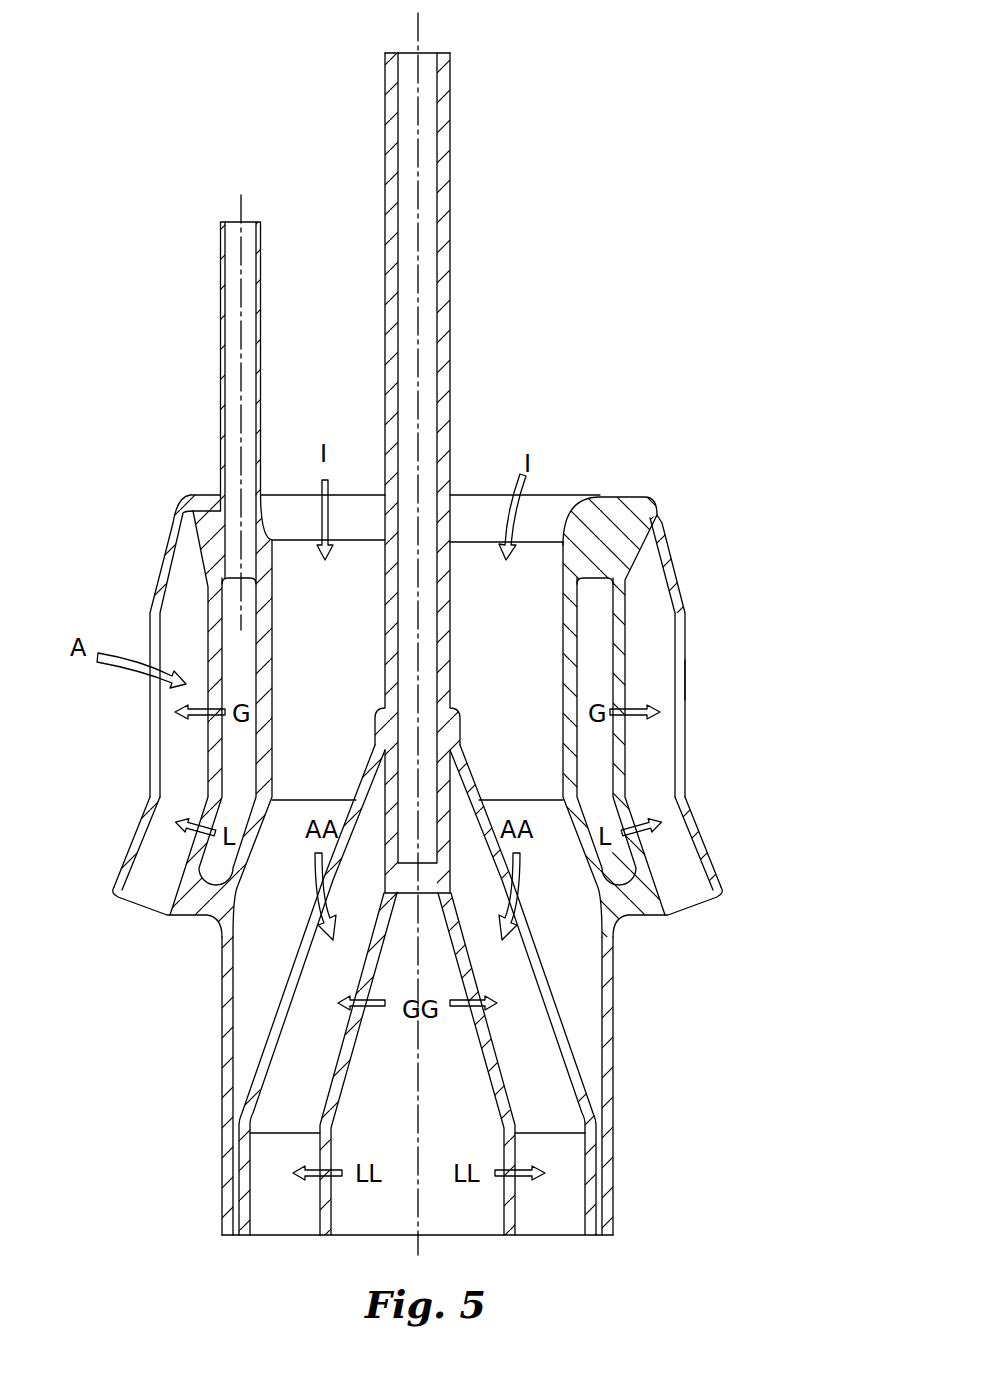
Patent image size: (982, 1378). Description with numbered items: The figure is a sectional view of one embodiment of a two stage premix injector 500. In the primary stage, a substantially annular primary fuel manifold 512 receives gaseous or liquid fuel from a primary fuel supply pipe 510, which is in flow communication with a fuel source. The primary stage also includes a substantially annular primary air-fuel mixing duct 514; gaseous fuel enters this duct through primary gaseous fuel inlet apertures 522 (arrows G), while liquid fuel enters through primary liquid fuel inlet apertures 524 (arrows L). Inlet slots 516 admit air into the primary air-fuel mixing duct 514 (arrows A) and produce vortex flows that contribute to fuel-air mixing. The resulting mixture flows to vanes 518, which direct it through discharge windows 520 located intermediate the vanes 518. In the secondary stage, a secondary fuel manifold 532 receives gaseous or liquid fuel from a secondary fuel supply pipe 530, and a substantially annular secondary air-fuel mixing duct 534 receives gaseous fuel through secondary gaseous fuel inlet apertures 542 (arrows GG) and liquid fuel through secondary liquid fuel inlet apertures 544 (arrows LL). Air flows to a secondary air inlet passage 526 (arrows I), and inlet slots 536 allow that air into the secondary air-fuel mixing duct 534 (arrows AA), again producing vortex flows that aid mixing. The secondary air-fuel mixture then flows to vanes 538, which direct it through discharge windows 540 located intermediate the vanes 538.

The two stage premix injector 500 is at (716, 308).
The primary fuel supply pipe 510 is at (233, 318).
The primary fuel manifold 512 is at (598, 607).
The primary air-fuel mixing duct 514 is at (661, 695).
The inlet slots 516 is at (165, 598).
The vanes 518 is at (148, 862).
The discharge windows 520 is at (152, 905).
The primary gaseous fuel inlet apertures 522 is at (207, 716).
The primary liquid fuel inlet apertures 524 is at (207, 827).
The secondary air inlet passage 526 is at (527, 588).
The secondary fuel supply pipe 530 is at (425, 147).
The secondary fuel manifold 532 is at (425, 955).
The secondary air-fuel mixing duct 534 is at (530, 1058).
The inlet slots 536 is at (300, 968).
The vanes 538 is at (570, 1175).
The discharge windows 540 is at (280, 1236).
The secondary gaseous fuel inlet apertures 542 is at (342, 1007).
The secondary liquid fuel inlet apertures 544 is at (325, 1165).